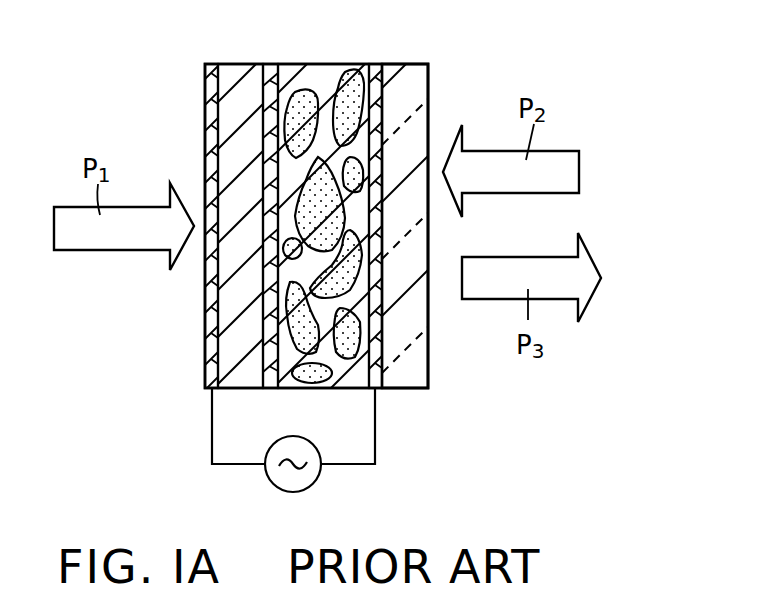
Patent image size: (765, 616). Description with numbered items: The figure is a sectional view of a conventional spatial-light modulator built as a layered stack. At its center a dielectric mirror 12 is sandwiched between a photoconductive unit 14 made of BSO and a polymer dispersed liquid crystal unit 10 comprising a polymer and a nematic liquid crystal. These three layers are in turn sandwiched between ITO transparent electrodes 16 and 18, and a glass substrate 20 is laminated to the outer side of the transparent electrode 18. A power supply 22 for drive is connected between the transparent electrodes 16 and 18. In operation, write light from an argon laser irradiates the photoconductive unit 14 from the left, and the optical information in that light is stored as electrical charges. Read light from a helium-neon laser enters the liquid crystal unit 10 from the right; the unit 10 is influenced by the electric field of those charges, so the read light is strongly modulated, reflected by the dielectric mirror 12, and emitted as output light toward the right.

The polymer dispersed liquid crystal unit 10 is at (322, 70).
The dielectric mirror 12 is at (270, 70).
The photoconductive unit 14 is at (236, 72).
The transparent electrode 16 is at (207, 85).
The transparent electrode 18 is at (376, 68).
The glass substrate 20 is at (410, 72).
The power supply 22 is at (296, 437).